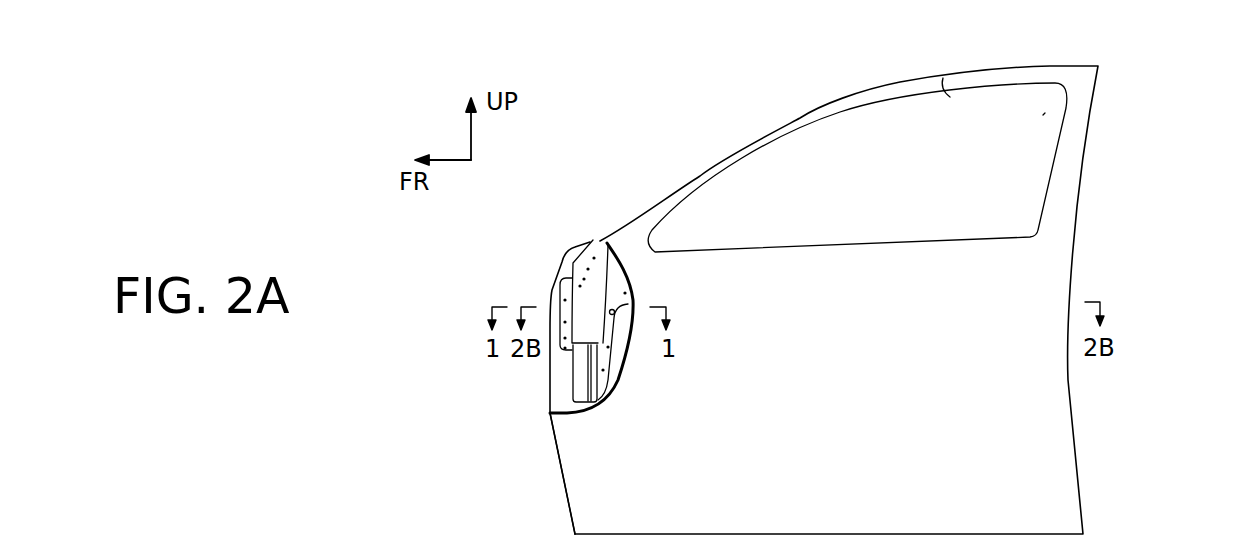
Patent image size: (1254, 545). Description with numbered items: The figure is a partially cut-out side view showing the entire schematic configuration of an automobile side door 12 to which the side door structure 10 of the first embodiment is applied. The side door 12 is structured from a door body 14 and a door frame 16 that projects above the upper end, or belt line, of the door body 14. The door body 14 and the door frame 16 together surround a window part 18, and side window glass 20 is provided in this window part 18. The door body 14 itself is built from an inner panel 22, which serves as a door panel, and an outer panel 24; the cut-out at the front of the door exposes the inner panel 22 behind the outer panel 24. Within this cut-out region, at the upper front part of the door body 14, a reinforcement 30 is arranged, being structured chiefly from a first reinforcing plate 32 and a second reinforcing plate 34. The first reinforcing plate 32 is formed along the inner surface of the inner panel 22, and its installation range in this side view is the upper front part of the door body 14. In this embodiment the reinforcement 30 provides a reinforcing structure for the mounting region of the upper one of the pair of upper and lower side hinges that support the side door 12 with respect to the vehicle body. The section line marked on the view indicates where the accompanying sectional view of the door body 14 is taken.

The side door structure 10 is at (592, 240).
The side door 12 is at (889, 300).
The door body 14 is at (1078, 266).
The door frame 16 is at (1093, 153).
The window part 18 is at (943, 80).
The side window glass 20 is at (1045, 115).
The inner panel 22 is at (570, 383).
The outer panel 24 is at (571, 450).
The reinforcement 30 is at (677, 364).
The first reinforcing plate 32 is at (603, 384).
The second reinforcing plate 34 is at (607, 326).